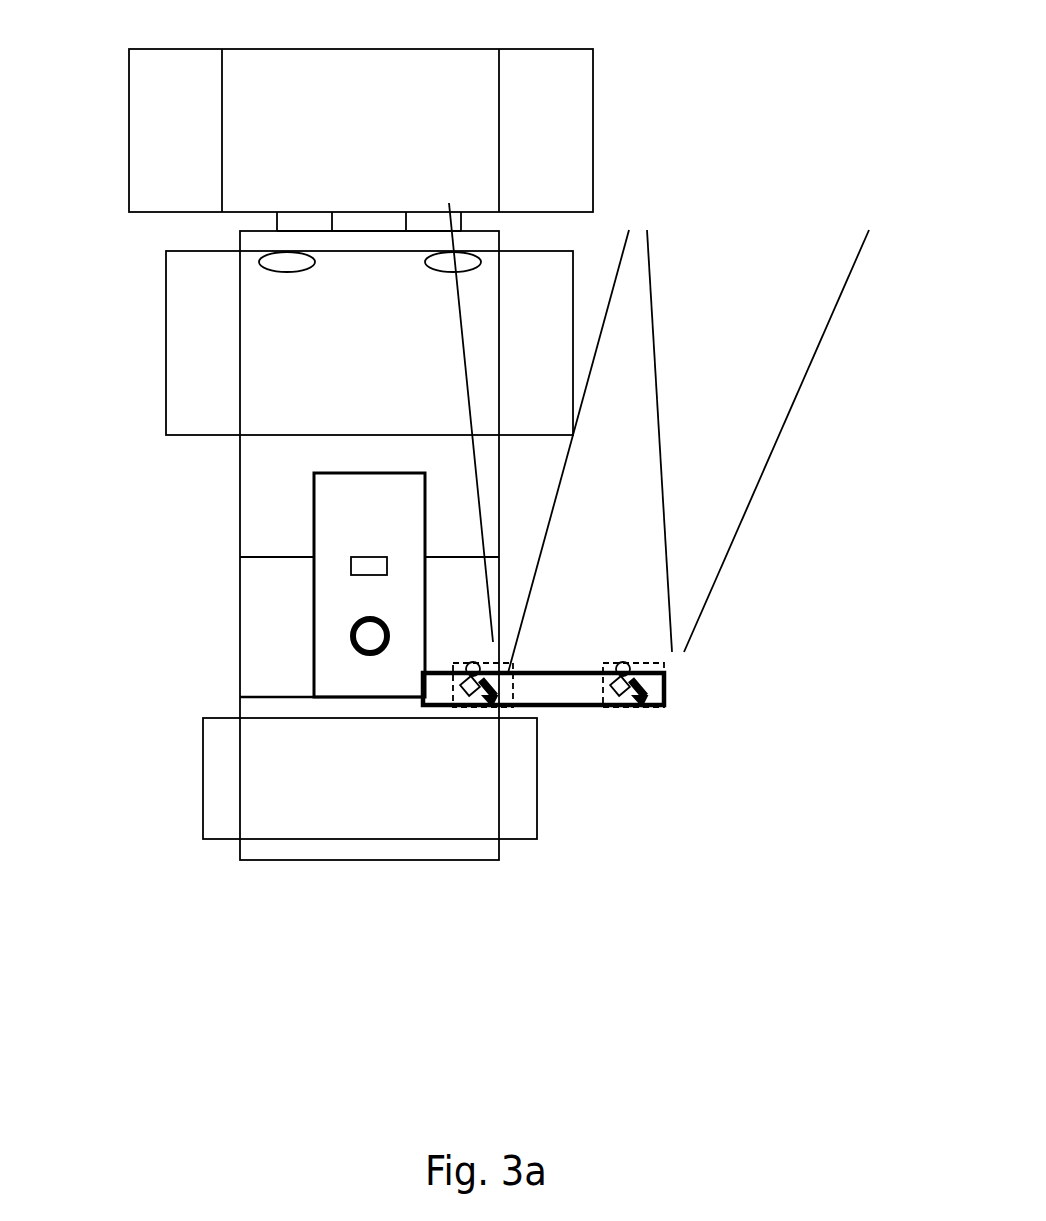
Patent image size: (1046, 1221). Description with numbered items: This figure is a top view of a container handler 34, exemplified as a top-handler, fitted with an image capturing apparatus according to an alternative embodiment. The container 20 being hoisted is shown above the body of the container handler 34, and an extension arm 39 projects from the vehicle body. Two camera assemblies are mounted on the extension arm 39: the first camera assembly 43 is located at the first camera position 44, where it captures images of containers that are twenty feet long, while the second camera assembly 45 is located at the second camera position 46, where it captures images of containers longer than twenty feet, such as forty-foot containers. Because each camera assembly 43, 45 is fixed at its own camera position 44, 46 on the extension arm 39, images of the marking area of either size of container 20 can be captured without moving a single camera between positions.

The container 20 is at (476, 126).
The container handler 34 is at (221, 514).
The extension arm 39 is at (538, 703).
The first camera assembly 43 is at (493, 710).
The first camera position 44 is at (508, 673).
The second camera assembly 45 is at (655, 710).
The second camera position 46 is at (665, 683).